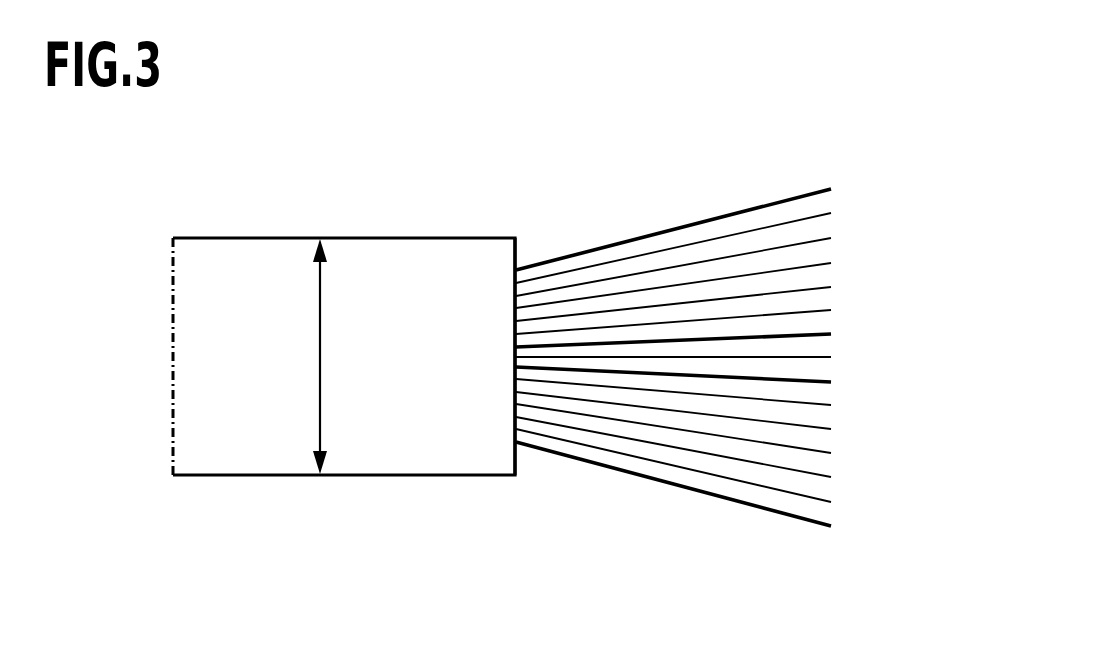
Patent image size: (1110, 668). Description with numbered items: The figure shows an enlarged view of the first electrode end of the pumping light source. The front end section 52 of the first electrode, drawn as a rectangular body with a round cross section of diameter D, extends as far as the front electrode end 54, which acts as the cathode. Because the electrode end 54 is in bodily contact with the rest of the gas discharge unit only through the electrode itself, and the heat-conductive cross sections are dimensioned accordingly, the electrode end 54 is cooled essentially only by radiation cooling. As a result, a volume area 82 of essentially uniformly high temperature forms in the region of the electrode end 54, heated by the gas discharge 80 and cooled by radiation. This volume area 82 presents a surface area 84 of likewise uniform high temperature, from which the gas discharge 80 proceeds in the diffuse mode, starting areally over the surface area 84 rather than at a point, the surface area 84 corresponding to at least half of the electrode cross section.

The front end section 52 is at (208, 397).
The front electrode end 54 is at (523, 460).
The gas discharge 80 is at (783, 527).
The volume area 82 is at (477, 400).
The surface area 84 is at (518, 348).